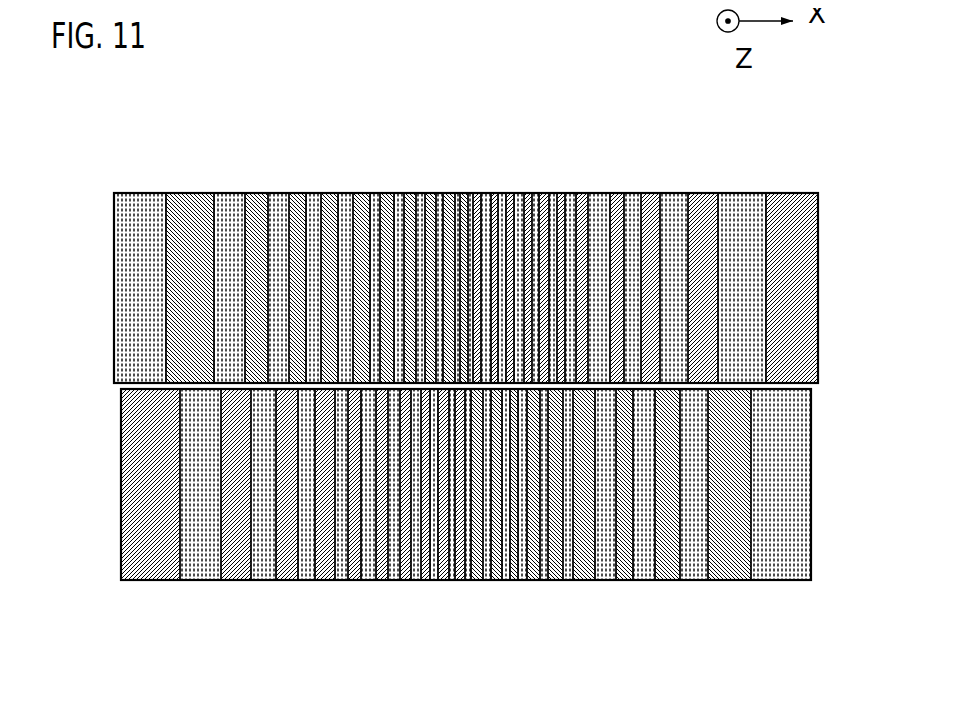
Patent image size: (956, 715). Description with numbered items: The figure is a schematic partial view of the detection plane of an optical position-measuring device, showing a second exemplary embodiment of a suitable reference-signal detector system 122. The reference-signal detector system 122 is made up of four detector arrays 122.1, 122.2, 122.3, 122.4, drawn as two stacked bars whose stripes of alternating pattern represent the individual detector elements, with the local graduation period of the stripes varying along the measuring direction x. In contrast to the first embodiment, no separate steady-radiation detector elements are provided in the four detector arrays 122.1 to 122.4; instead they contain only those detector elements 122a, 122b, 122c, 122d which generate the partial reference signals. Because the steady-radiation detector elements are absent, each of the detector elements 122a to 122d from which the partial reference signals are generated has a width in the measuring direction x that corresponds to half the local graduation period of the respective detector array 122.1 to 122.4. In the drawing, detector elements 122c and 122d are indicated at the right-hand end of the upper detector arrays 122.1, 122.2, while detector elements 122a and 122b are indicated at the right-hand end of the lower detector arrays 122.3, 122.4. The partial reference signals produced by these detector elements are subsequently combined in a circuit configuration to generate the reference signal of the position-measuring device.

The reference-signal detector system 122 is at (82, 380).
The first detector array 122.1 is at (155, 173).
The second detector array 122.2 is at (633, 170).
The third detector array 122.3 is at (183, 588).
The fourth detector array 122.4 is at (583, 586).
The detector element 122a is at (775, 548).
The detector element 122b is at (723, 556).
The detector element 122c is at (790, 194).
The detector element 122d is at (732, 195).